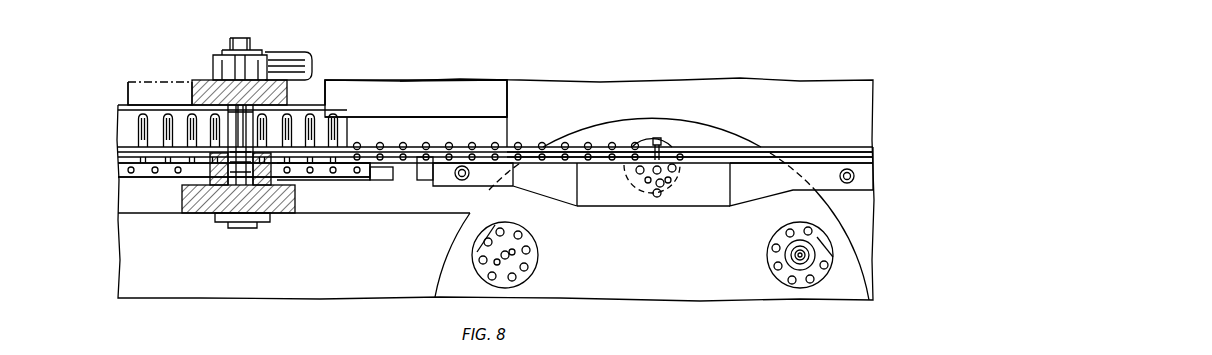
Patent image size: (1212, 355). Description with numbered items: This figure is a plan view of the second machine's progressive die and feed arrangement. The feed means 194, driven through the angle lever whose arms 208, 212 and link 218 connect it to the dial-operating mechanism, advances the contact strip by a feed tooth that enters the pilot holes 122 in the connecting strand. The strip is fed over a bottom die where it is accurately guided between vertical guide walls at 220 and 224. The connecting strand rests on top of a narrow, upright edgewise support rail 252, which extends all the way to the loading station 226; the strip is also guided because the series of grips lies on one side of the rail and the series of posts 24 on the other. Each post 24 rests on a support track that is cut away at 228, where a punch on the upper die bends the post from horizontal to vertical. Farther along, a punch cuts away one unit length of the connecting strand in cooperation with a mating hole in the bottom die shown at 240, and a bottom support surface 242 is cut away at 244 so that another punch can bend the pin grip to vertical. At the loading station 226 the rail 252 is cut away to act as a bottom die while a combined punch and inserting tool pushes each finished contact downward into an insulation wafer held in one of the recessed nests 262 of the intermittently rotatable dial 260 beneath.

The post 24 is at (338, 118).
The pilot holes 122 is at (133, 174).
The feed means 194 is at (239, 229).
The arm 208 is at (194, 80).
The arm 212 is at (143, 80).
The link 218 is at (297, 57).
The vertical guide wall 220 is at (420, 117).
The vertical guide wall 224 is at (362, 182).
The loading station 226 is at (658, 128).
The cut-away of support track 228 is at (362, 127).
The mating hole in bottom die 240 is at (388, 181).
The bottom support surface 242 is at (425, 181).
The cut-away of bottom support surface 244 is at (434, 181).
The support rail 252 is at (733, 150).
The dial 260 is at (696, 272).
The recessed nests 262 is at (670, 140).